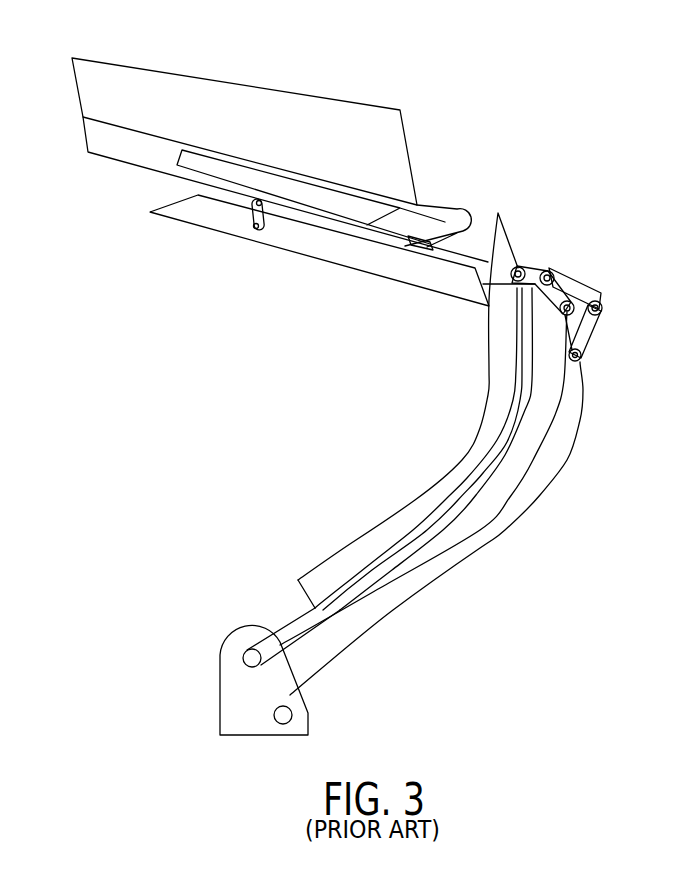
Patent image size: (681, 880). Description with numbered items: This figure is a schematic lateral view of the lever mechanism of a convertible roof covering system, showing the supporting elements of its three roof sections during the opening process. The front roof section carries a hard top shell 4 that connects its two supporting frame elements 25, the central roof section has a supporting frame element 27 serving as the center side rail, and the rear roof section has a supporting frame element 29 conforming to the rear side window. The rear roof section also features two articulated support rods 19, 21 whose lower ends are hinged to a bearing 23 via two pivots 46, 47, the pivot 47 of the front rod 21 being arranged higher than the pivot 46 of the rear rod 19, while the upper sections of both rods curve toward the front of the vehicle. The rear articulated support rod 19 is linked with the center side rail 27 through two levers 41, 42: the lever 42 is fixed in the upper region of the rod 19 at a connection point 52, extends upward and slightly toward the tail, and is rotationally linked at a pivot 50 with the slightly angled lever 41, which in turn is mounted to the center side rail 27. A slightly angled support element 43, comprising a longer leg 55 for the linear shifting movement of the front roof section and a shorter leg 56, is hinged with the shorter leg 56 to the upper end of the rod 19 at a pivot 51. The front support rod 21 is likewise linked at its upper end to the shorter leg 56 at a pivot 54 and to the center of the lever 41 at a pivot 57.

The hard top shell 4 is at (231, 93).
The supporting frame element 25 is at (120, 152).
The longer leg 55 is at (305, 192).
The supporting frame element 27 is at (328, 256).
The support element 43 is at (477, 229).
The supporting frame element 29 is at (460, 460).
The pivot 57 is at (483, 286).
The shorter leg 56 is at (545, 305).
The pivot 54 is at (520, 266).
The lever 41 is at (552, 273).
The pivot 51 is at (580, 296).
The pivot 50 is at (602, 307).
The lever 42 is at (592, 325).
The connection point 52 is at (583, 358).
The rear articulated support rod 19 is at (532, 477).
The front articulated support rod 21 is at (305, 623).
The bearing 23 is at (236, 718).
The pivot 47 is at (243, 661).
The pivot 46 is at (292, 716).